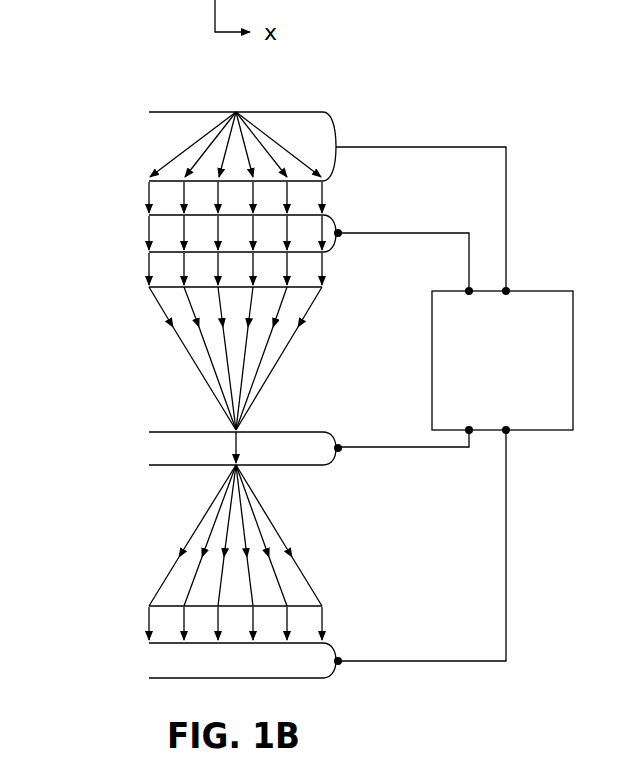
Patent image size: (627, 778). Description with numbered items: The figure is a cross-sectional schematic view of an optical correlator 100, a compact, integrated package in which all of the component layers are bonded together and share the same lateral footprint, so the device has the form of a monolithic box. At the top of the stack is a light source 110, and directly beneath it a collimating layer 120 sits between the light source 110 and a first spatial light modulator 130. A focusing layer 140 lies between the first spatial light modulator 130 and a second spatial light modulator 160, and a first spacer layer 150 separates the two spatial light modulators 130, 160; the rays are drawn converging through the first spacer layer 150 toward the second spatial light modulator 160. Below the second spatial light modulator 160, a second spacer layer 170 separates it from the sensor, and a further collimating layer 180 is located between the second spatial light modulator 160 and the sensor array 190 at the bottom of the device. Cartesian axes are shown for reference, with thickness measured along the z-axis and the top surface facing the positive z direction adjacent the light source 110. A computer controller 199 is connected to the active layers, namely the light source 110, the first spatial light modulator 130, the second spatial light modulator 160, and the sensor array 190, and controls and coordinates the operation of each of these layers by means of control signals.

The optical correlator 100 is at (371, 122).
The light source 110 is at (130, 112).
The collimating layer 120 is at (130, 182).
The first spatial light modulator 130 is at (130, 216).
The focusing layer 140 is at (130, 253).
The first spacer layer 150 is at (130, 289).
The second spatial light modulator 160 is at (130, 432).
The second spacer layer 170 is at (130, 467).
The further collimating layer 180 is at (130, 607).
The sensor array 190 is at (130, 643).
The computer controller 199 is at (482, 365).